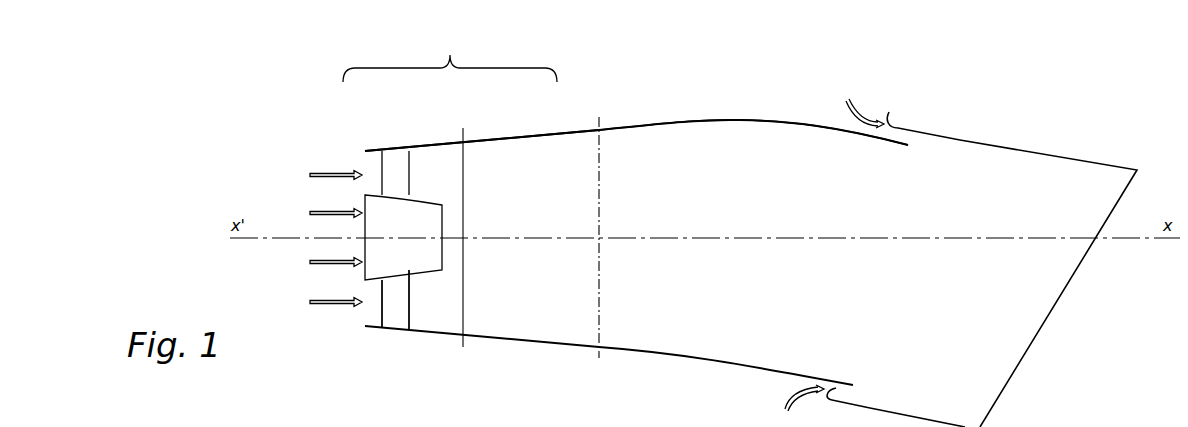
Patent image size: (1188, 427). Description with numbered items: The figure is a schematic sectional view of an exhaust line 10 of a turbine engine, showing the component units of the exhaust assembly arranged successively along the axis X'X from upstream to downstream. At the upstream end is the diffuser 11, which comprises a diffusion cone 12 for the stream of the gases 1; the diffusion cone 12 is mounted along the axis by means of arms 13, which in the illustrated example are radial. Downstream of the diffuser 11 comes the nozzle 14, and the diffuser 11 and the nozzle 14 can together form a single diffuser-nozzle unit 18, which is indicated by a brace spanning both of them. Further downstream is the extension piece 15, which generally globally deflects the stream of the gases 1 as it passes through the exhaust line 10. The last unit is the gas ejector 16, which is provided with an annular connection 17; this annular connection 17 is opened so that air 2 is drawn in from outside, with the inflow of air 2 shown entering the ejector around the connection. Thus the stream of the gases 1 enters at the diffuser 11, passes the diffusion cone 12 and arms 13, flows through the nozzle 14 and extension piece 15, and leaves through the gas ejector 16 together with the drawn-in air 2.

The stream of the gases 1 is at (318, 213).
The air 2 is at (861, 106).
The exhaust line 10 is at (672, 82).
The diffuser 11 is at (399, 147).
The diffusion cone 12 is at (425, 284).
The arms 13 is at (393, 293).
The nozzle 14 is at (543, 134).
The extension piece 15 is at (754, 120).
The gas ejector 16 is at (1004, 145).
The annular connection 17 is at (902, 117).
The diffuser-nozzle unit 18 is at (450, 179).